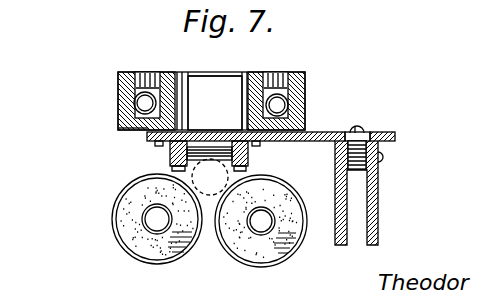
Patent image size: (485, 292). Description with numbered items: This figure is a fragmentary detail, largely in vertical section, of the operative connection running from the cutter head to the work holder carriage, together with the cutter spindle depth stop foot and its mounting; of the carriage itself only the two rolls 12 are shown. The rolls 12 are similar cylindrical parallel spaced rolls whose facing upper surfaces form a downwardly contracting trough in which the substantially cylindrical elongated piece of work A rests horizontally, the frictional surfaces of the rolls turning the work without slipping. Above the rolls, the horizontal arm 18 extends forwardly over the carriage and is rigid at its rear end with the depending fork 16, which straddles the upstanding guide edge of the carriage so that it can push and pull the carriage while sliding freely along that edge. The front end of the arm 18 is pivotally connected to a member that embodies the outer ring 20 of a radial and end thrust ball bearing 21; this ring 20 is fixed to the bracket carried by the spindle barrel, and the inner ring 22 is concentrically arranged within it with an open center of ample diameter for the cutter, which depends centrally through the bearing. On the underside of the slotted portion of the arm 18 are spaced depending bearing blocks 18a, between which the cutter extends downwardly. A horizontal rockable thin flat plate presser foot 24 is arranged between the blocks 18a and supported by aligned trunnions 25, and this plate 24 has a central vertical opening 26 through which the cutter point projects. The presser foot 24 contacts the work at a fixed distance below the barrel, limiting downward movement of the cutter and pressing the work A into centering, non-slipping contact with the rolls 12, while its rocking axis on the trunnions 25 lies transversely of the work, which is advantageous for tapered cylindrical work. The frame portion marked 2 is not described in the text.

The frame 2 is at (231, 42).
The rolls 12 is at (152, 250).
The depending fork 16 is at (347, 221).
The horizontal arm 18 is at (395, 136).
The bearing blocks 18a is at (168, 142).
The outer ring 20 is at (302, 100).
The ball bearing 21 is at (261, 73).
The inner ring 22 is at (143, 133).
The presser foot 24 is at (178, 175).
The trunnions 25 is at (308, 127).
The central vertical opening 26 is at (190, 152).
The piece of work A is at (210, 220).